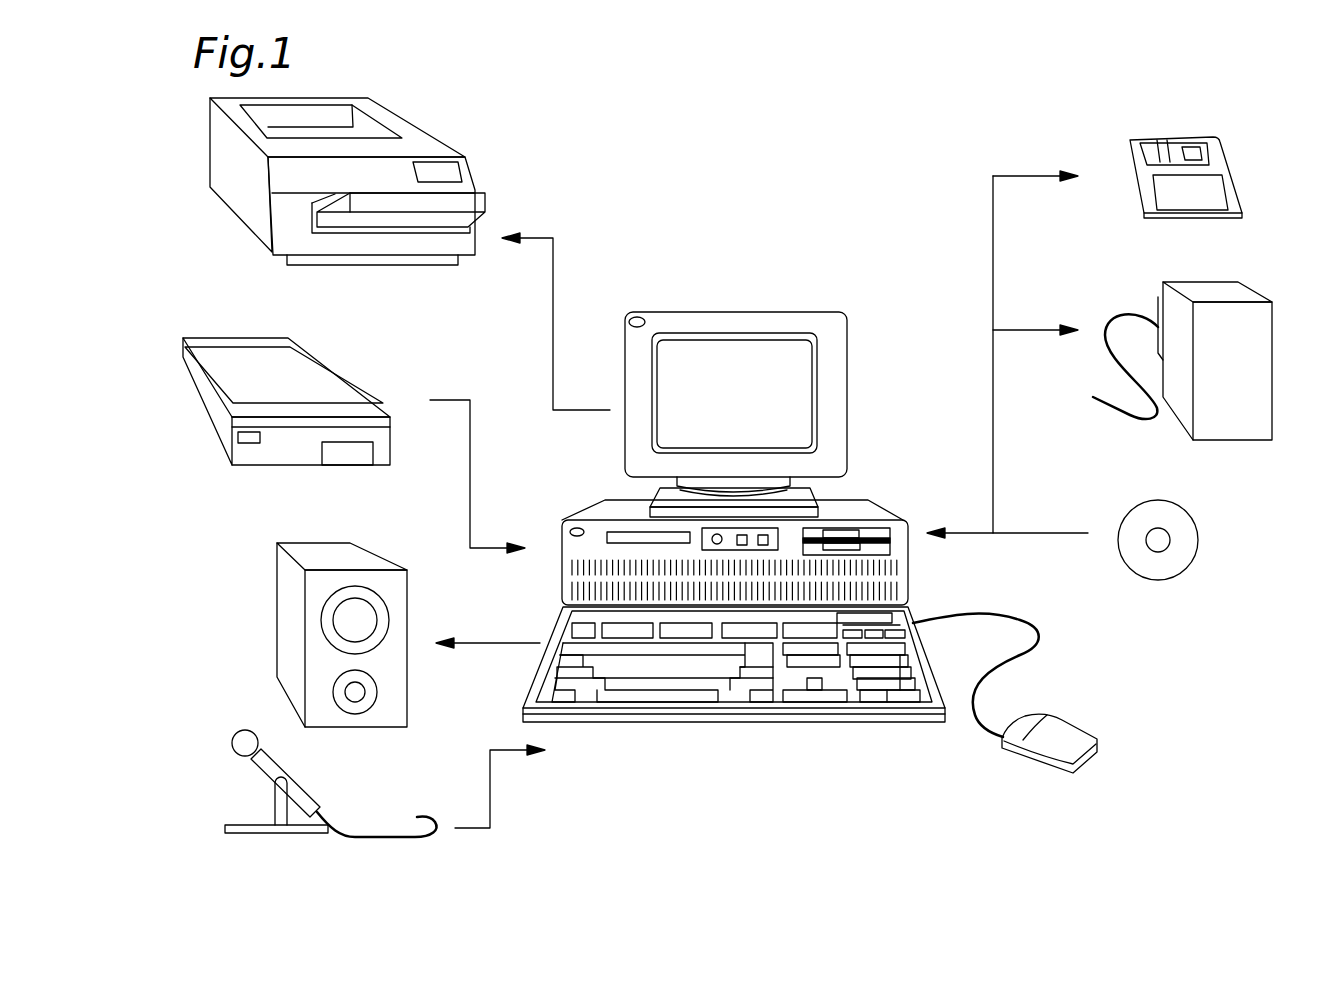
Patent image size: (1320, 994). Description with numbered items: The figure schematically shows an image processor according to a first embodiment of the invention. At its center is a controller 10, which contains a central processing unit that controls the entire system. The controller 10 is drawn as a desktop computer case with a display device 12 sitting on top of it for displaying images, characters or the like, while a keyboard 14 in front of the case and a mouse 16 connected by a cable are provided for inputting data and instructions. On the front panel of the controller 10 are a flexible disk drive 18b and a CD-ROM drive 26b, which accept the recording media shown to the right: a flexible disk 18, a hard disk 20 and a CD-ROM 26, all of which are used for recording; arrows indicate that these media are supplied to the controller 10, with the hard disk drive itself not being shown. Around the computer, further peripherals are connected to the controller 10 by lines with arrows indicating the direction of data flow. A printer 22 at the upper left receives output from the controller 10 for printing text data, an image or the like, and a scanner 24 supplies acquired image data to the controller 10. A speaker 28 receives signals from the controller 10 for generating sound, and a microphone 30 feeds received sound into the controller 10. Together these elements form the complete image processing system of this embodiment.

The controller 10 is at (722, 535).
The display device 12 is at (622, 382).
The keyboard 14 is at (555, 633).
The mouse 16 is at (1040, 745).
The flexible disk 18 is at (1215, 190).
The flexible disk drive 18b is at (873, 532).
The hard disk 20 is at (1230, 290).
The printer 22 is at (432, 145).
The scanner 24 is at (322, 382).
The CD-ROM 26 is at (1180, 517).
The CD-ROM drive 26b is at (606, 538).
The speaker 28 is at (343, 553).
The microphone 30 is at (296, 794).